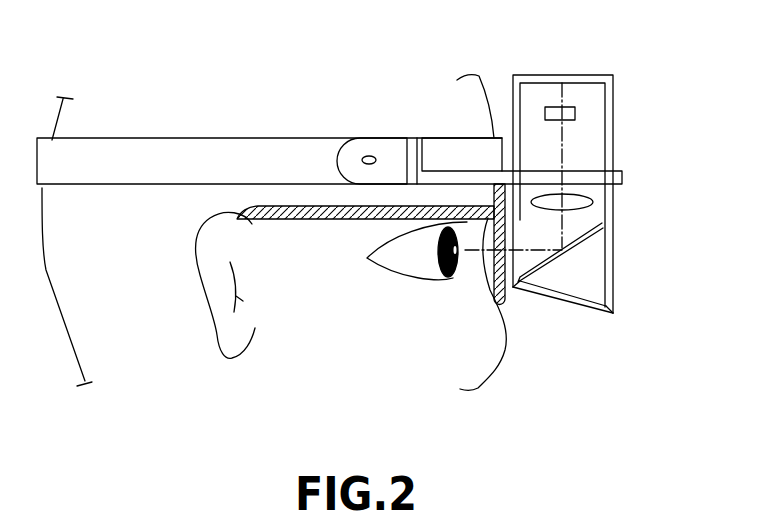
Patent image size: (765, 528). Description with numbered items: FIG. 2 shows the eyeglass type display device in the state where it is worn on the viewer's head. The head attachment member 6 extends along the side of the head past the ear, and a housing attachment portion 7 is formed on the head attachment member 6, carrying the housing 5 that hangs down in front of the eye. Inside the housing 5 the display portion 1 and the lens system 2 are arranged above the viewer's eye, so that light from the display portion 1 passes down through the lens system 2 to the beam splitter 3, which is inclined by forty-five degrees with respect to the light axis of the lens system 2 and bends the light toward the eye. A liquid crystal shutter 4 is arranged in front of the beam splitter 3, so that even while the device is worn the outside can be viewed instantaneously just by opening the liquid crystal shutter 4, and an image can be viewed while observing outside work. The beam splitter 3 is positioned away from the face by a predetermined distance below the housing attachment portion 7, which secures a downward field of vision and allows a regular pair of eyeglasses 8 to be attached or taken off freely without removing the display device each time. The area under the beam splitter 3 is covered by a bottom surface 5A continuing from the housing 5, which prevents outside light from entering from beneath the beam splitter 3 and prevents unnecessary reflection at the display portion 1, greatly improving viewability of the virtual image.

The display portion 1 is at (577, 113).
The lens system 2 is at (598, 199).
The beam splitter 3 is at (580, 247).
The liquid crystal shutter 4 is at (615, 295).
The housing 5 is at (567, 74).
The bottom surface 5A is at (570, 305).
The head attachment member 6 is at (213, 138).
The housing attachment portion 7 is at (443, 138).
The pair of eyeglasses 8 is at (505, 302).